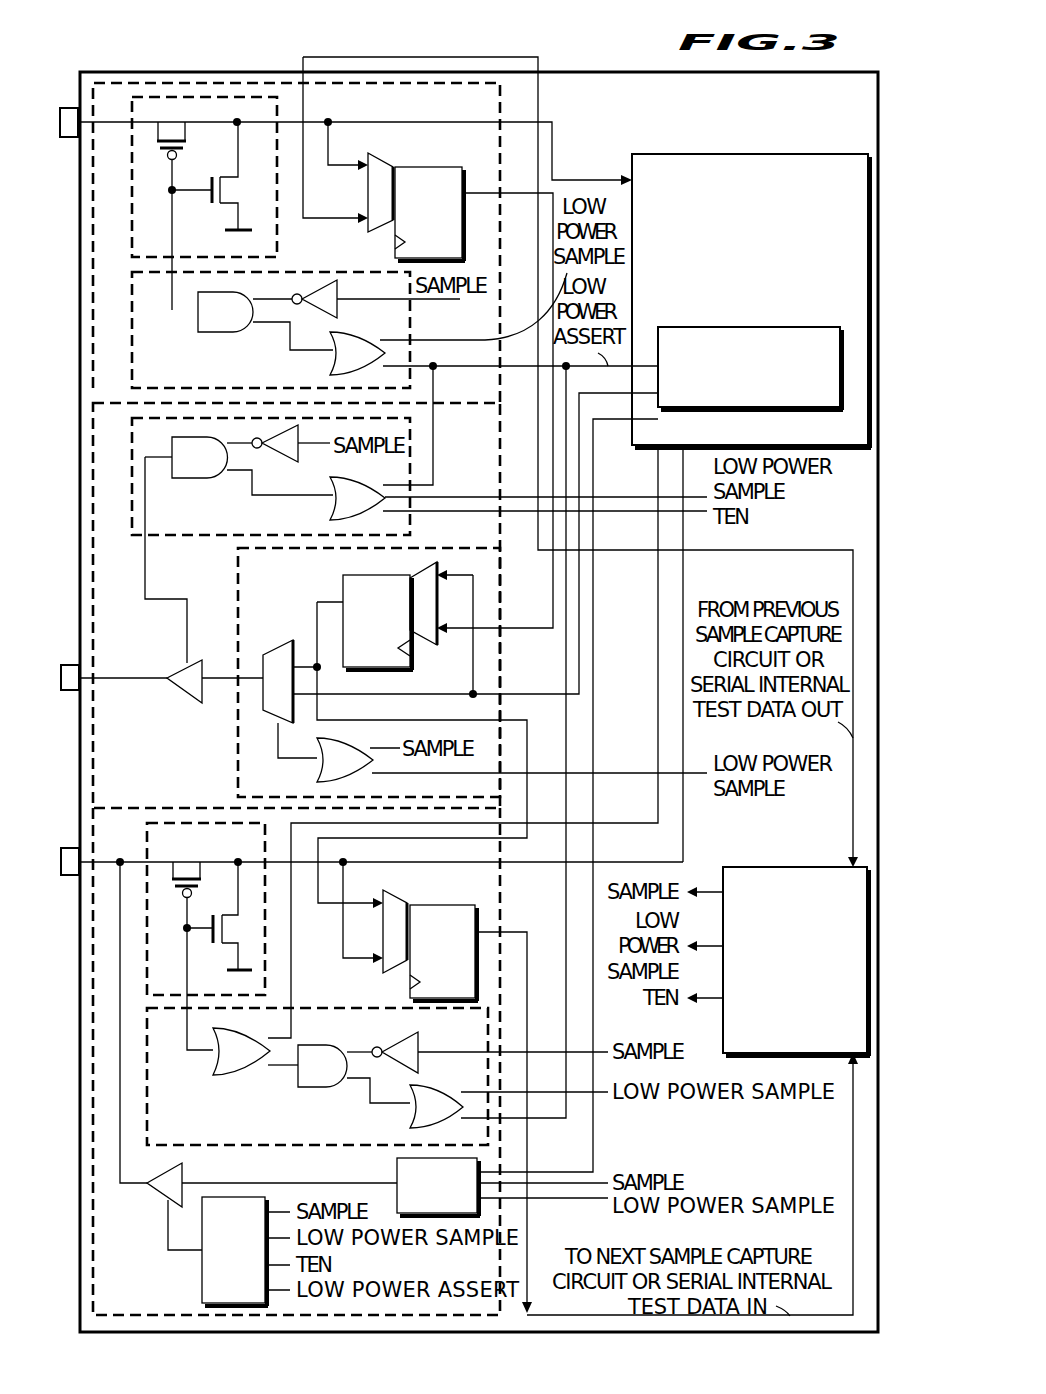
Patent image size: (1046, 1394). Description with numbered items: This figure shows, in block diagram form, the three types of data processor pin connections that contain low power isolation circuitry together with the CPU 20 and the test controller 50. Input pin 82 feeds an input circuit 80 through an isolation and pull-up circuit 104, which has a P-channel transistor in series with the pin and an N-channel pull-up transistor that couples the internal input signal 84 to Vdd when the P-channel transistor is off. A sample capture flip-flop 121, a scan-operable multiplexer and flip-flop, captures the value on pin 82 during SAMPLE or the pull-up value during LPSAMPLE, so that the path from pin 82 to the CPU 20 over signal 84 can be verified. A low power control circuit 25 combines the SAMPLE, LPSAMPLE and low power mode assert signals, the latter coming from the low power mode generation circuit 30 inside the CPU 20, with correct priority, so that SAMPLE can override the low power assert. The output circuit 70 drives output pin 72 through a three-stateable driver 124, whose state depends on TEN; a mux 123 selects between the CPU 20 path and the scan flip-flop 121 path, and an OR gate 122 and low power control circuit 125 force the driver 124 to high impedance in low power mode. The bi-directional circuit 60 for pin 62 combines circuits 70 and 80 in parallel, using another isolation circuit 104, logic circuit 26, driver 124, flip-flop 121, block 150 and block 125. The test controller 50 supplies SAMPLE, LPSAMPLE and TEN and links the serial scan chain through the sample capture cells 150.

The central processing unit 20 is at (816, 276).
The low power control circuit 25 is at (228, 379).
The logic circuit 26 is at (214, 1131).
The low power mode generation circuit 30 is at (710, 327).
The test controller 50 is at (843, 1026).
The bi-directional input/output circuit 60 is at (148, 1301).
The bi-directional input/output pin 62 is at (70, 848).
The output circuit 70 is at (161, 799).
The output pin 72 is at (70, 665).
The input circuit 80 is at (408, 116).
The input pin 82 is at (76, 108).
The internal input signal 84 is at (604, 178).
The isolation and pull-up circuit 104 is at (220, 247).
The sample capture flip-flop 121 is at (422, 170).
The OR gate 122 is at (318, 777).
The mux 123 is at (273, 647).
The three-stateable driver 124 is at (182, 699).
The low power control circuit 125 is at (248, 523).
The sample capture cell 150 is at (286, 589).